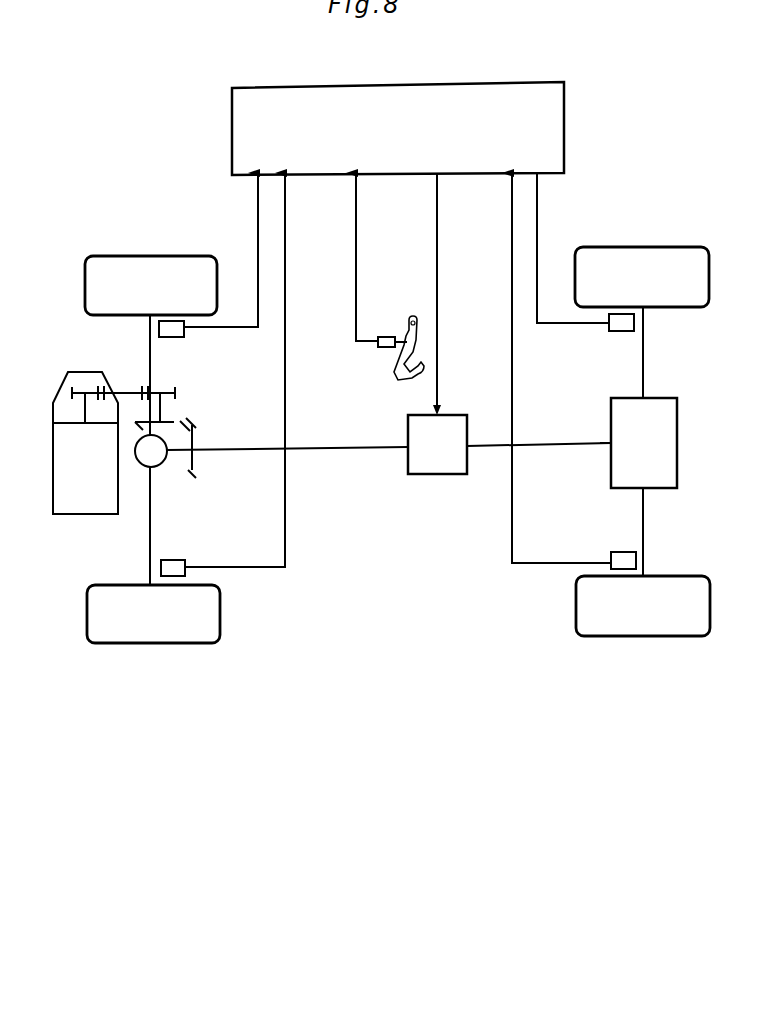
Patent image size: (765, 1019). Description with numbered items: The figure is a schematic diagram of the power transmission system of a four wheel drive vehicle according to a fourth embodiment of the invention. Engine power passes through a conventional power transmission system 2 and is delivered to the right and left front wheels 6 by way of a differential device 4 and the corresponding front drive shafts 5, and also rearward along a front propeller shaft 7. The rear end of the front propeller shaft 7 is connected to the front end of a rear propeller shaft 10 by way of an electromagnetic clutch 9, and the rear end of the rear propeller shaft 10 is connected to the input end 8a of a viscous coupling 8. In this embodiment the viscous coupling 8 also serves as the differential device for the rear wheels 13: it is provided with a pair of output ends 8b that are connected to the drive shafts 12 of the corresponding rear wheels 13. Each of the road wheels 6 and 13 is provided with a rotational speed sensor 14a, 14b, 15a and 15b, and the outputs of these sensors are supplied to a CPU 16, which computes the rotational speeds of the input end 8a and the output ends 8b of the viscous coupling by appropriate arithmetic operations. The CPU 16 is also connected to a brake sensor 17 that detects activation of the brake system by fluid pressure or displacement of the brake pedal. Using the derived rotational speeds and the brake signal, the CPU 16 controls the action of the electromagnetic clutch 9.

The power transmission system 2 is at (70, 372).
The differential device 4 is at (140, 468).
The front drive shafts 5 is at (150, 355).
The front wheel 6 is at (182, 256).
The front propeller shaft 7 is at (338, 450).
The viscous coupling 8 is at (678, 445).
The input end 8a is at (611, 440).
The output ends 8b is at (648, 396).
The electromagnetic clutch 9 is at (452, 474).
The rear propeller shaft 10 is at (545, 446).
The drive shafts 12 is at (645, 340).
The rear wheels 13 is at (680, 247).
The rotational speed sensor 14a is at (168, 560).
The rotational speed sensor 14b is at (185, 338).
The rotational speed sensor 15a is at (612, 553).
The rotational speed sensor 15b is at (608, 332).
The CPU 16 is at (565, 120).
The brake sensor 17 is at (391, 330).